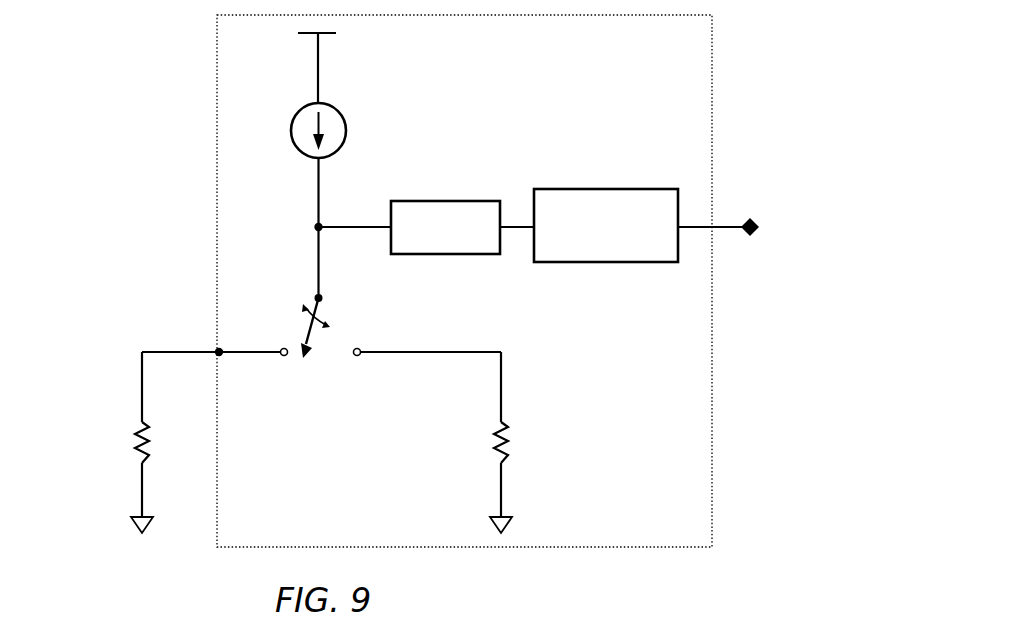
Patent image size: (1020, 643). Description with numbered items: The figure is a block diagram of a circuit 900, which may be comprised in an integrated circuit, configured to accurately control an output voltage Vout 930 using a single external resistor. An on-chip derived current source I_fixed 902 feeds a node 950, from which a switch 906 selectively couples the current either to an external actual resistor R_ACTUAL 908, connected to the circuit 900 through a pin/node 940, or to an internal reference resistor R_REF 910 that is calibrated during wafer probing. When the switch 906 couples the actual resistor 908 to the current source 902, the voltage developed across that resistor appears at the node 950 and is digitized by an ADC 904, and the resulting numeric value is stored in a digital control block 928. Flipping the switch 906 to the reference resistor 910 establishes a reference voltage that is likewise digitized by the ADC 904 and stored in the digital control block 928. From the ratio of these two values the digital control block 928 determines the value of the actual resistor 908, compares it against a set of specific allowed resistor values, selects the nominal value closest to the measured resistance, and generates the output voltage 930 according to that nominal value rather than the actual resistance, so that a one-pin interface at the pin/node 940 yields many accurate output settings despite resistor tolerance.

The circuit 900 is at (708, 541).
The current source 902 is at (347, 125).
The ADC 904 is at (441, 201).
The switch 906 is at (310, 333).
The actual resistor 908 is at (151, 435).
The reference resistor 910 is at (492, 441).
The digital control block 928 is at (622, 262).
The output voltage 930 is at (744, 231).
The pin/node 940 is at (219, 352).
The node 950 is at (318, 227).